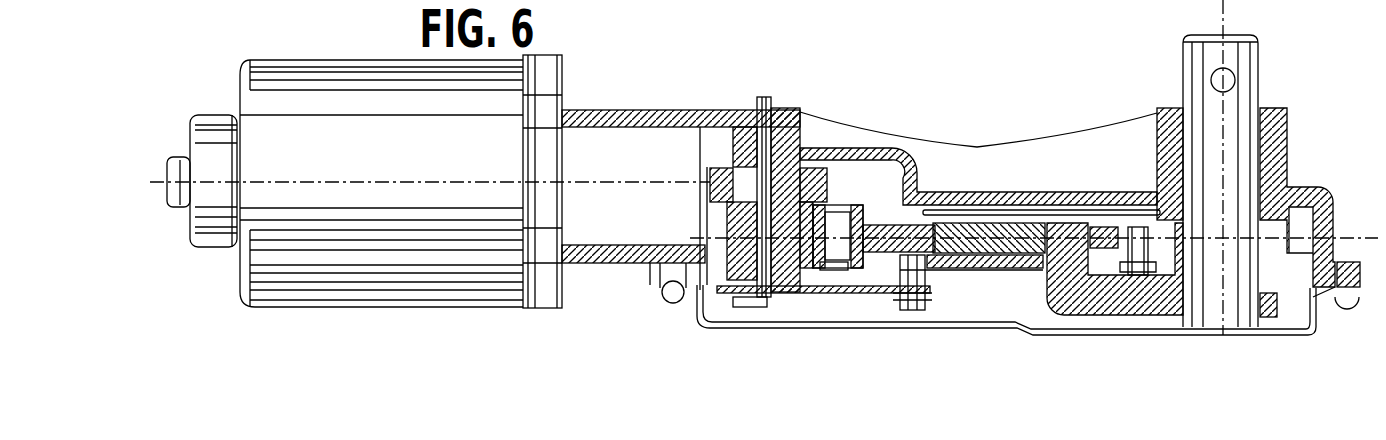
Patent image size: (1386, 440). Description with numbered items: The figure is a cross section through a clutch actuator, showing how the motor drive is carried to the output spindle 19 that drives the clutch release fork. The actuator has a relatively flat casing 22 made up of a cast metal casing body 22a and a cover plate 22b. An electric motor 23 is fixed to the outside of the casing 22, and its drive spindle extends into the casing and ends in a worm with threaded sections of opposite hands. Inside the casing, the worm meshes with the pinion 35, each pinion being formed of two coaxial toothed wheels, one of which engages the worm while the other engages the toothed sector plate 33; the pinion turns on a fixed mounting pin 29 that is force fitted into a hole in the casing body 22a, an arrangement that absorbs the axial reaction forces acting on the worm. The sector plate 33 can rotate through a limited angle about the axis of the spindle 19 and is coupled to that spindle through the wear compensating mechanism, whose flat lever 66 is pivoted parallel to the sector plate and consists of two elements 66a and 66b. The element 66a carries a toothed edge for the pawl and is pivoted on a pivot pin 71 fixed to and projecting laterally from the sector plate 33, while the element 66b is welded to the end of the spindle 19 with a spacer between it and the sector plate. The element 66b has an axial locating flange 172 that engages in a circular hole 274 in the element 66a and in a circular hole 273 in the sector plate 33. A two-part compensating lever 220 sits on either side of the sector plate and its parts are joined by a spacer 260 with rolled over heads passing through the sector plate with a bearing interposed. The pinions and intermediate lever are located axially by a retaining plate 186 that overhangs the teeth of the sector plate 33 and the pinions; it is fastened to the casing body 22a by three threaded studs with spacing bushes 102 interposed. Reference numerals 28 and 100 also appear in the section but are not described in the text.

The spindle 19 is at (1183, 73).
The casing 22 is at (655, 98).
The casing body 22a is at (1300, 143).
The cover plate 22b is at (1175, 334).
The electric motor 23 is at (342, 58).
The end plate 28 is at (786, 107).
The mounting pin 29 is at (766, 115).
The toothed sector plate 33 is at (990, 224).
The pinion 35 is at (840, 204).
The flat lever 66 is at (996, 293).
The lever element 66a is at (948, 270).
The lever element 66b is at (1278, 297).
The pivot pin 71 is at (1132, 272).
The housing wall 100 is at (940, 193).
The spacing bush 102 is at (878, 298).
The axial locating flange 172 is at (1068, 209).
The retaining plate 186 is at (793, 297).
The compensating lever 220 is at (873, 203).
The spacer 260 is at (832, 268).
The circular hole 273 is at (1053, 222).
The circular hole 274 is at (1042, 275).